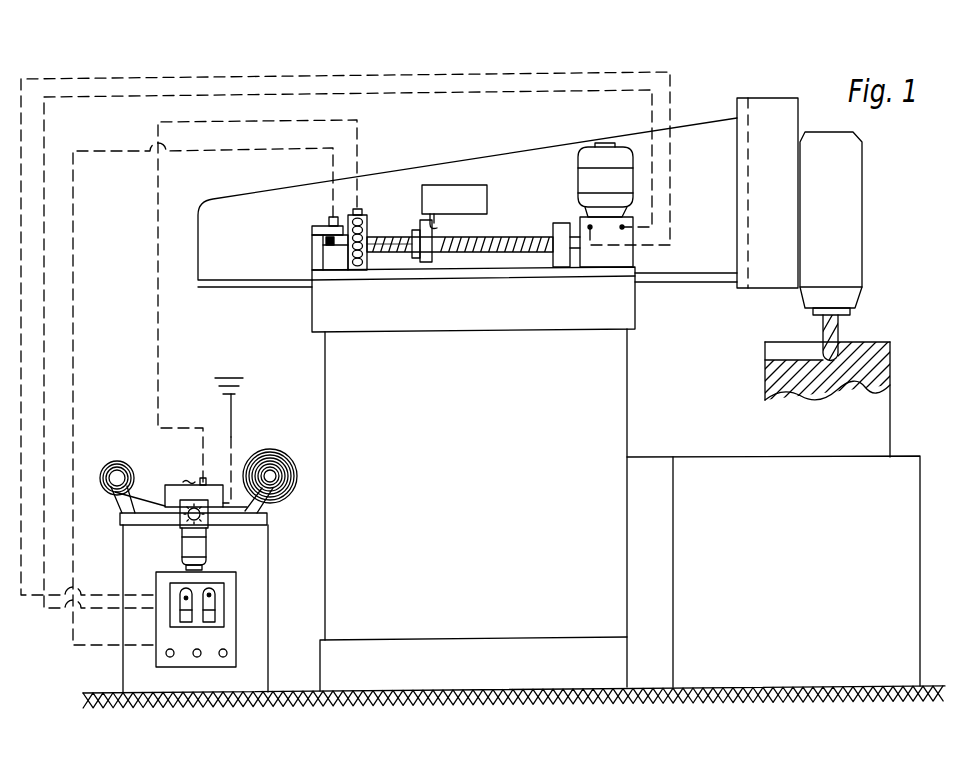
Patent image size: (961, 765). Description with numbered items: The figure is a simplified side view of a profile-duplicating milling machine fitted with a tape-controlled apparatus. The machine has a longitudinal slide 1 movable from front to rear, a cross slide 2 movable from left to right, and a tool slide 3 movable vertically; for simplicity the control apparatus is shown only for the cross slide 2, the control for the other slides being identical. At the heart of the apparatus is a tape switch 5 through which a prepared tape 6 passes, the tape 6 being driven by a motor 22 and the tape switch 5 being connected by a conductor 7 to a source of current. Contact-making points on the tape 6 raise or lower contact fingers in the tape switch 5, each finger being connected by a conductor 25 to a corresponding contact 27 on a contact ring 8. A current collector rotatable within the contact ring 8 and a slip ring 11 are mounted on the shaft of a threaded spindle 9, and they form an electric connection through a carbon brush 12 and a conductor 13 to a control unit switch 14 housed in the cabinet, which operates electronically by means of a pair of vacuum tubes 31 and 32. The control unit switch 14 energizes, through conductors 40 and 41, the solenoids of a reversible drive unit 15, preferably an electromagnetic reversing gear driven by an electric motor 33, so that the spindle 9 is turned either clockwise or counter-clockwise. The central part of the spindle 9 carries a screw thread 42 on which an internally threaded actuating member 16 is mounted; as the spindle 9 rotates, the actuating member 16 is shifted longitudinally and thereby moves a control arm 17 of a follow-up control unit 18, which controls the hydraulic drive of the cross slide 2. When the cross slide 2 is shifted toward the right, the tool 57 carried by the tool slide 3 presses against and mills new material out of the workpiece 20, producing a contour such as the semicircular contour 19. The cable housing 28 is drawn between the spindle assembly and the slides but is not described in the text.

The longitudinal slide 1 is at (627, 307).
The cross slide 2 is at (708, 258).
The tool slide 3 is at (768, 105).
The tape switch 5 is at (175, 497).
The tape 6 is at (147, 504).
The conductor 7 is at (234, 436).
The contact ring 8 is at (360, 272).
The threaded spindle 9 is at (386, 253).
The slip ring 11 is at (324, 247).
The carbon brush 12 is at (329, 222).
The conductor 13 is at (281, 150).
The control unit switch 14 is at (228, 633).
The reversible drive unit 15 is at (588, 224).
The actuating member 16 is at (425, 264).
The control arm 17 is at (440, 226).
The follow-up control unit 18 is at (475, 190).
The semicircular contour 19 is at (802, 360).
The workpiece 20 is at (872, 418).
The motor 22 is at (199, 547).
The conductor 25 is at (251, 121).
The contact 27 is at (362, 218).
The cable housing 28 is at (328, 280).
The vacuum tube 31 is at (187, 608).
The vacuum tube 32 is at (212, 608).
The electric motor 33 is at (592, 150).
The conductor 40 is at (428, 75).
The conductor 41 is at (481, 93).
The screw thread 42 is at (512, 253).
The tool 57 is at (838, 318).